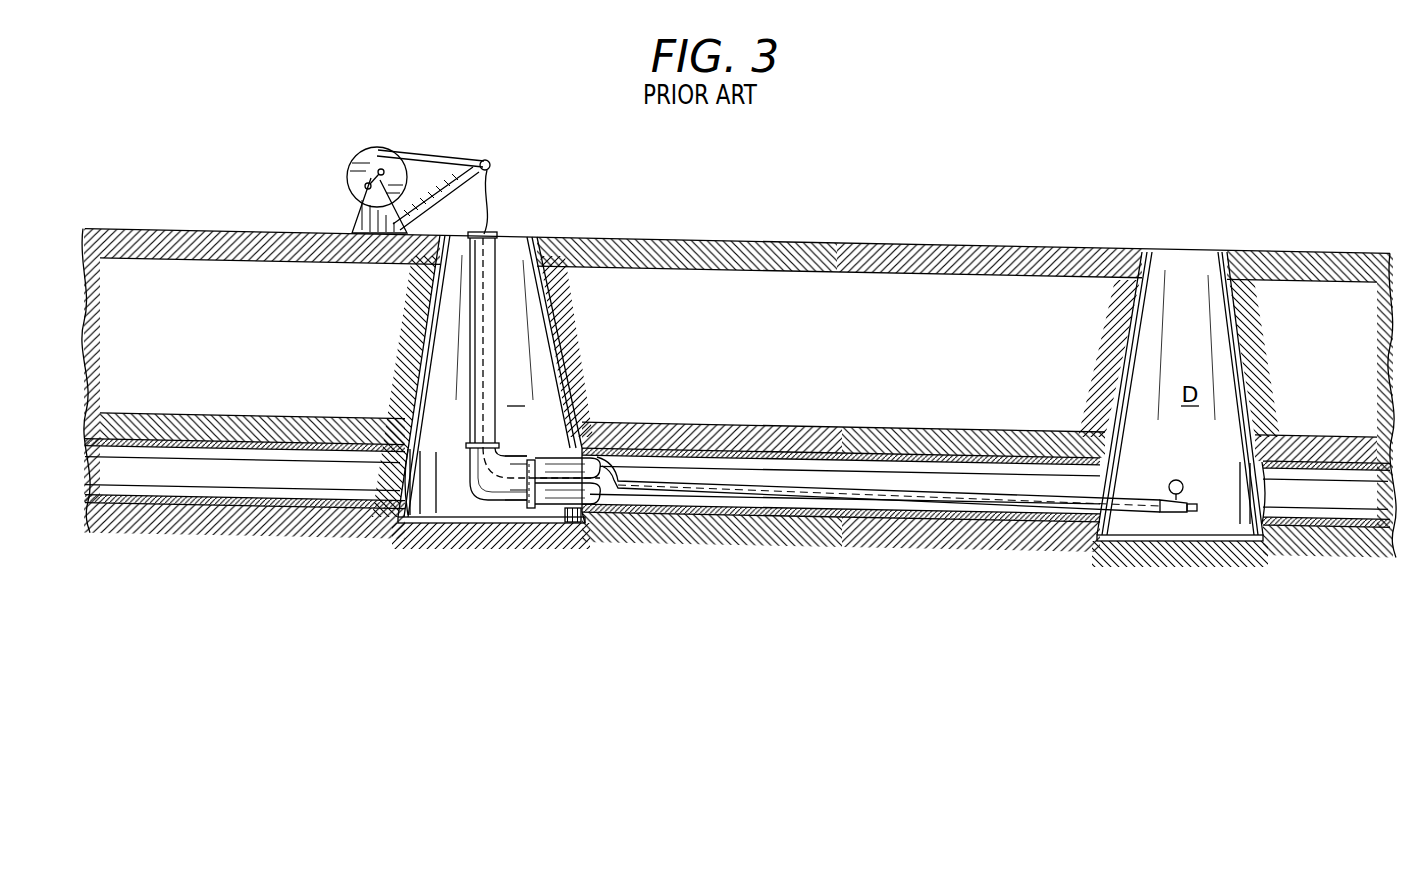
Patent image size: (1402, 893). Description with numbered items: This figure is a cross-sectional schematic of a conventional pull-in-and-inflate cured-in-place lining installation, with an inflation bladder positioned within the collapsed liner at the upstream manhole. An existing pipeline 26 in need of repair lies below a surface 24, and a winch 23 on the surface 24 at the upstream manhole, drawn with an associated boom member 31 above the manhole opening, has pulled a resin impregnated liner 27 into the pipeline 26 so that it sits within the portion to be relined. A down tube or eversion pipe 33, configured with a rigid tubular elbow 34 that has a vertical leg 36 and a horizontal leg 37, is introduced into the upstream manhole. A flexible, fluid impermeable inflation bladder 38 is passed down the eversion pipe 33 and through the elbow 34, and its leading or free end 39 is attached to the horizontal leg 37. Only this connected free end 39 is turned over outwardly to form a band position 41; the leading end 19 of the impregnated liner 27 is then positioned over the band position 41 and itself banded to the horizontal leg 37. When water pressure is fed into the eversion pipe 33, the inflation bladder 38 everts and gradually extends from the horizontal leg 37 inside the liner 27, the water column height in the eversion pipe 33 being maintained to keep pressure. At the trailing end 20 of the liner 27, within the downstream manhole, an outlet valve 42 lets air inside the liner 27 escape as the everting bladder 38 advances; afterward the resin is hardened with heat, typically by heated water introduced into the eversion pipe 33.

The leading end 19 is at (584, 513).
The trailing end 20 is at (1137, 485).
The winch 23 is at (347, 186).
The surface 24 is at (780, 236).
The existing pipeline 26 is at (868, 450).
The resin impregnated liner 27 is at (683, 497).
The boom 31 is at (467, 161).
The eversion pipe 33 is at (497, 369).
The rigid tubular elbow 34 is at (478, 523).
The vertical leg 36 is at (470, 472).
The horizontal leg 37 is at (508, 495).
The inflation bladder 38 is at (577, 452).
The free end 39 is at (540, 493).
The band position 41 is at (533, 457).
The outlet valve 42 is at (1183, 482).